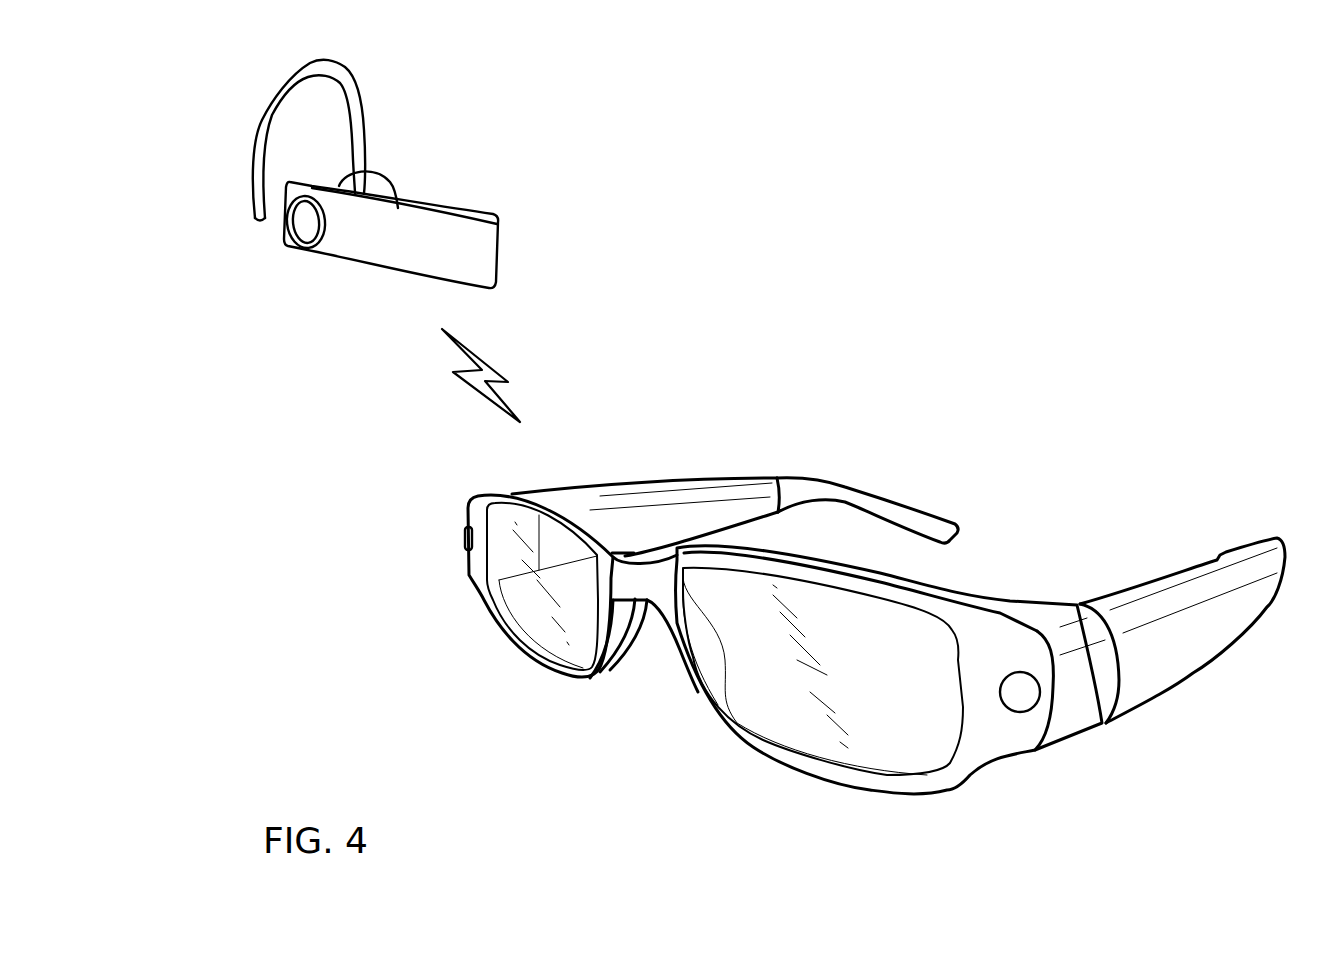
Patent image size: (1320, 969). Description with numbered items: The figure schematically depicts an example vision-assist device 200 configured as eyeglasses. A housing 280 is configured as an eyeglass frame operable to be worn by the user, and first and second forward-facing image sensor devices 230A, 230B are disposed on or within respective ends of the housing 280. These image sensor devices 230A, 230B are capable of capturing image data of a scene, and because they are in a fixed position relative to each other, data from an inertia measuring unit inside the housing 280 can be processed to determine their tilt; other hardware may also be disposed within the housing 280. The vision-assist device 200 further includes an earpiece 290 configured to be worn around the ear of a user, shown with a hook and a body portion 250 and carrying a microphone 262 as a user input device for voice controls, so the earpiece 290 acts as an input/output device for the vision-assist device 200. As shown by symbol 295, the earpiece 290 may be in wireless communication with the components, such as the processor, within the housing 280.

The vision-assist device 200 is at (908, 268).
The first forward-facing image sensor device 230A is at (466, 540).
The second forward-facing image sensor device 230B is at (1030, 705).
The earbud speaker portion 250 is at (393, 183).
The microphone 262 is at (397, 268).
The housing 280 is at (732, 462).
The earpiece 290 is at (222, 118).
The symbol 295 is at (497, 370).